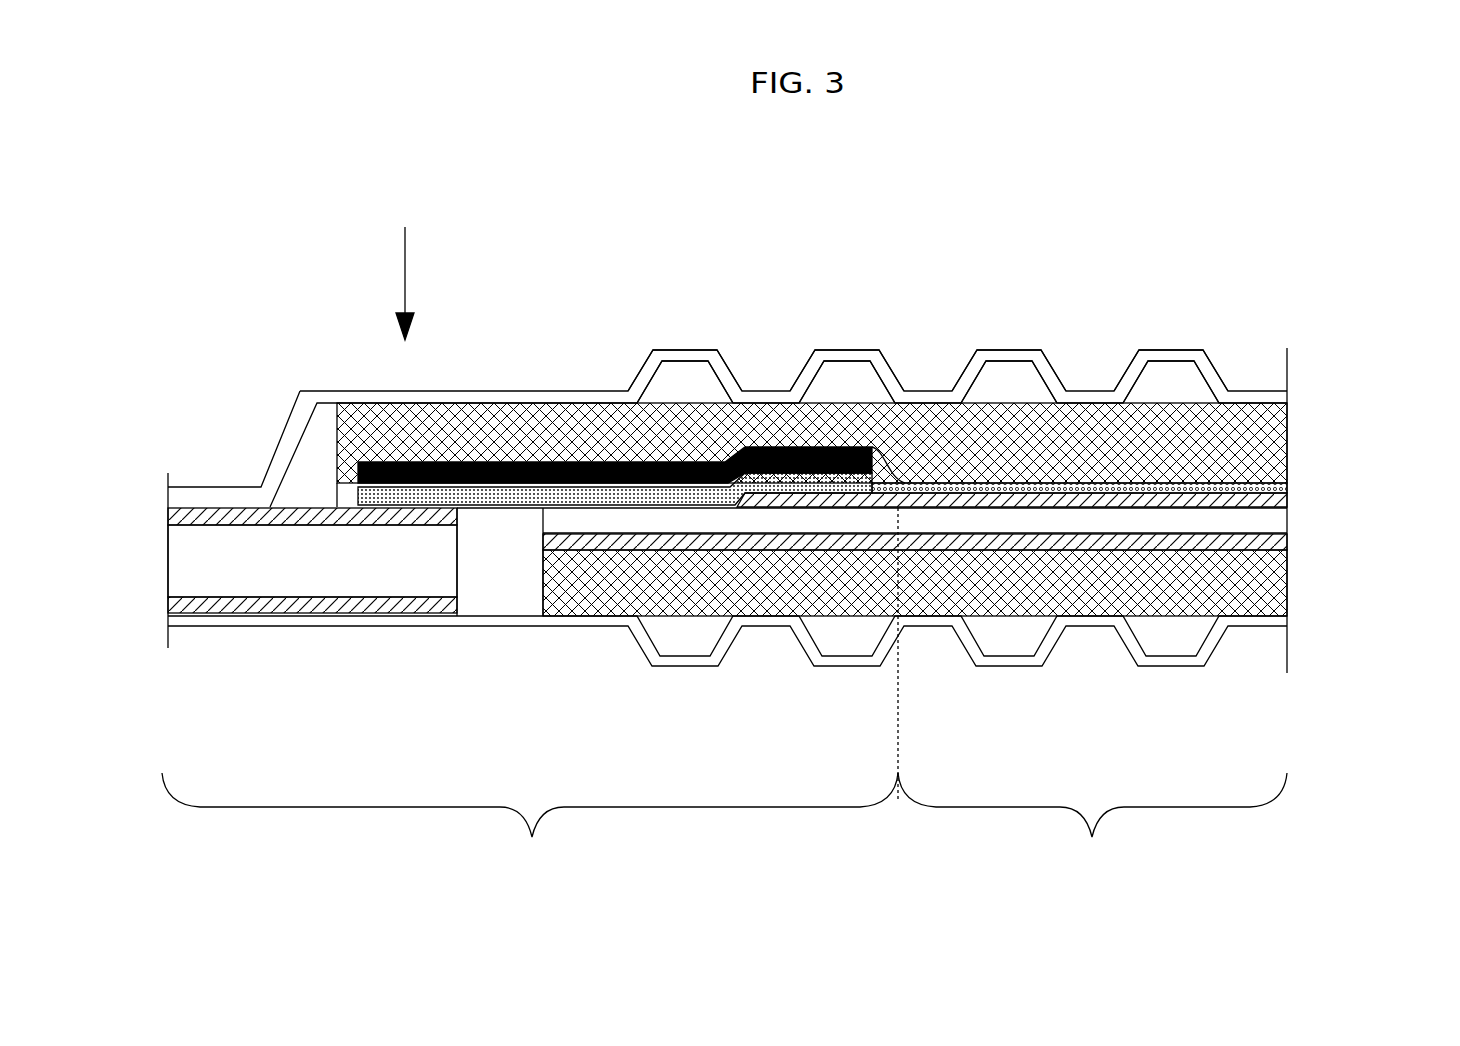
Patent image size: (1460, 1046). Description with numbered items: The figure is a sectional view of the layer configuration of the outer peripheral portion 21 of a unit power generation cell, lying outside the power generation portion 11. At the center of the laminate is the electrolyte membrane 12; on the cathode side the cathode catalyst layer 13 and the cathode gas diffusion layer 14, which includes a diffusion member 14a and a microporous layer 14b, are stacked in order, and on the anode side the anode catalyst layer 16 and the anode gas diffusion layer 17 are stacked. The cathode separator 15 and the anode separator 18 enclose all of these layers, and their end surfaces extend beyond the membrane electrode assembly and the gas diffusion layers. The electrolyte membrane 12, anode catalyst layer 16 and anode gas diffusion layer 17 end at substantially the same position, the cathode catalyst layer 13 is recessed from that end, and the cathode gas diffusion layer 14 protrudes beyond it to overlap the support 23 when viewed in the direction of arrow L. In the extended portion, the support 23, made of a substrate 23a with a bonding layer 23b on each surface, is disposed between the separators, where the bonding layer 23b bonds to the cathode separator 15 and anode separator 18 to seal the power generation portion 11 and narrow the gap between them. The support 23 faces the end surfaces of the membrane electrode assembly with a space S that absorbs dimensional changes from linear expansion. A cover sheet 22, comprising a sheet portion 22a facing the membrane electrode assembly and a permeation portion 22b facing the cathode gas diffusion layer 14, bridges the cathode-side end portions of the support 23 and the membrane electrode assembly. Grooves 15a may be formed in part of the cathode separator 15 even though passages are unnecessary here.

The power generation portion 11 is at (1092, 824).
The electrolyte membrane 12 is at (1281, 518).
The cathode catalyst layer 13 is at (1284, 500).
The cathode gas diffusion layer 14 is at (896, 449).
The diffusion member 14a is at (1288, 443).
The microporous layer 14b is at (1290, 487).
The cathode separator 15 is at (1290, 390).
The grooves 15a is at (688, 375).
The anode catalyst layer 16 is at (1281, 540).
The anode gas diffusion layer 17 is at (1281, 583).
The anode separator 18 is at (1281, 620).
The outer peripheral portion 21 is at (530, 824).
The cover sheet 22 is at (500, 434).
The sheet portion 22a is at (358, 495).
The permeation portion 22b is at (345, 467).
The support 23 is at (270, 624).
The substrate 23a is at (332, 570).
The bonding layer 23b is at (213, 527).
The space S is at (498, 572).
The arrow L is at (405, 268).